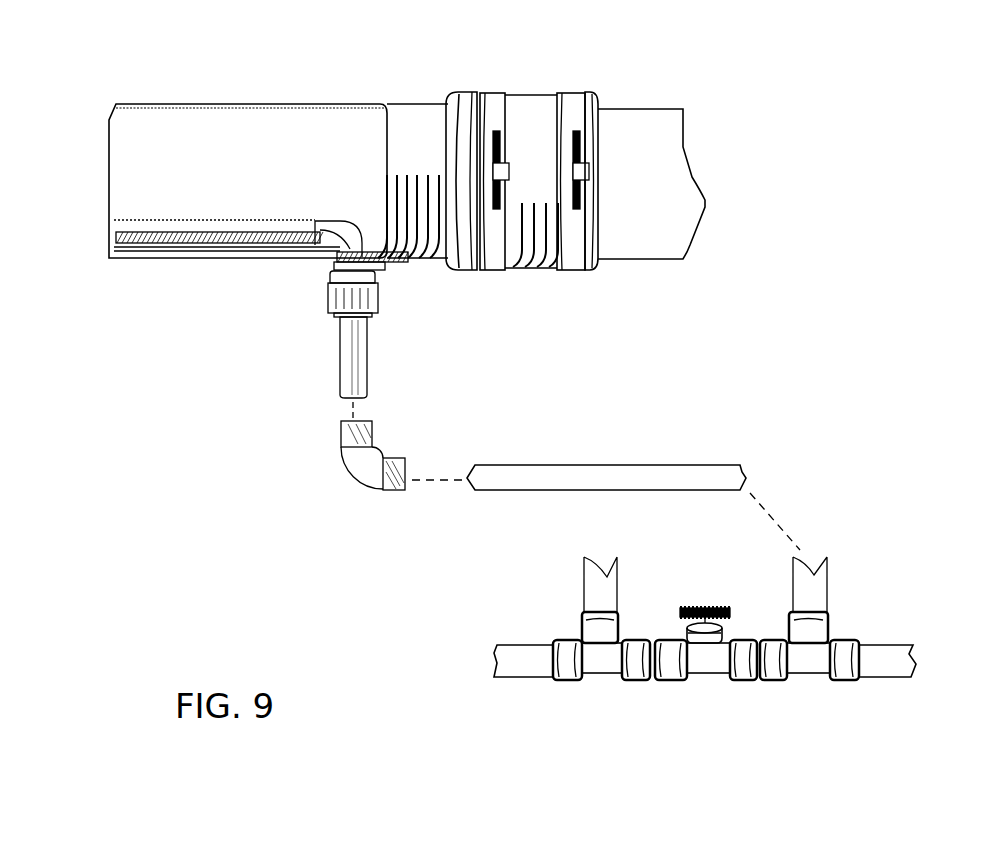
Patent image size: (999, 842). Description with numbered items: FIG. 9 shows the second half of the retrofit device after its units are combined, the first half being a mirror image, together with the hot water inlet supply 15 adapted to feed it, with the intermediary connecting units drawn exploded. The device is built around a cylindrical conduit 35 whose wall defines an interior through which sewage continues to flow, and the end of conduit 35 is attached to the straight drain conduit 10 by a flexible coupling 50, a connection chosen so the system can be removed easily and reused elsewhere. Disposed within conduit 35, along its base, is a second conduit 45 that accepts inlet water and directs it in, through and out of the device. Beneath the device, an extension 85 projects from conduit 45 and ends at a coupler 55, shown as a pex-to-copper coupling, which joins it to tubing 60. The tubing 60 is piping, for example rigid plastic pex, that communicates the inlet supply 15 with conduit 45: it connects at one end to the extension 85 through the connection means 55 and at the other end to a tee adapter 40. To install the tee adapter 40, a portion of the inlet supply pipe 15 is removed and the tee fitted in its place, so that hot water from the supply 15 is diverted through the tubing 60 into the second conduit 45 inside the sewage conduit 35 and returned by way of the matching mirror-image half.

The drain conduit 10 is at (630, 106).
The hot water inlet supply 15 is at (890, 642).
The conduit 35 is at (291, 106).
The tee adapter 40 is at (700, 695).
The second conduit 45 is at (113, 240).
The flexible coupling 50 is at (508, 90).
The coupler 55 is at (355, 470).
The tubing 60 is at (612, 463).
The extension 85 is at (370, 352).